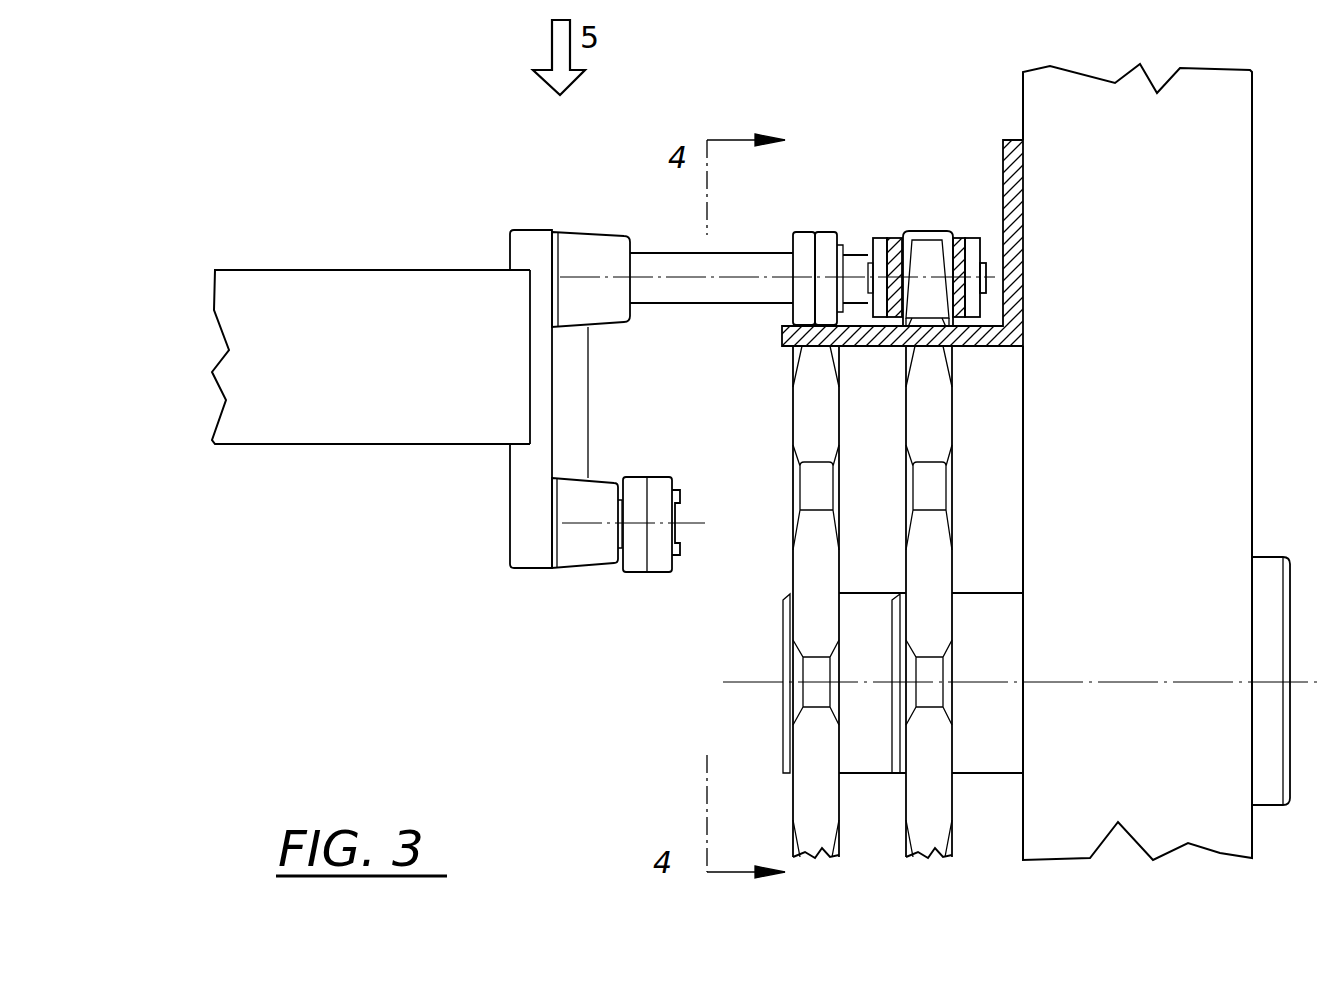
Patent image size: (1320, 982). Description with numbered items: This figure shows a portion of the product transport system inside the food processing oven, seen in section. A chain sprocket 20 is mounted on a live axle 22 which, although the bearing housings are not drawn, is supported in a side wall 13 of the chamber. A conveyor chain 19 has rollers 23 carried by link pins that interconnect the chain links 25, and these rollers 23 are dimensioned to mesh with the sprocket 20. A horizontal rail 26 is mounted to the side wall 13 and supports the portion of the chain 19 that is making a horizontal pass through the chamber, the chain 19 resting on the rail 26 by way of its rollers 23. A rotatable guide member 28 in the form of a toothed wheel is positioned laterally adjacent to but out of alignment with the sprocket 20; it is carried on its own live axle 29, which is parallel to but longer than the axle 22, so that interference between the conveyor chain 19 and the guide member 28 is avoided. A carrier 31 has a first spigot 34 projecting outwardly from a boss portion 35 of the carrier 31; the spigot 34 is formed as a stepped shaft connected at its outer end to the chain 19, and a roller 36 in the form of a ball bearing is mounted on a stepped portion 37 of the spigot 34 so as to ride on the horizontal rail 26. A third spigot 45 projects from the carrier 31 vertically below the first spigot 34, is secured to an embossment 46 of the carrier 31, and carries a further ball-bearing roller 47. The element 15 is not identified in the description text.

The side wall 13 is at (1218, 195).
The beam 15 is at (368, 428).
The conveyor chain 19 is at (910, 208).
The chain sprocket 20 is at (938, 573).
The live axle 22 is at (988, 605).
The roller 23 is at (928, 231).
The chain link 25 is at (990, 273).
The horizontal rail 26 is at (980, 352).
The rotatable guide member 28 is at (807, 765).
The live axle 29 is at (866, 745).
The carrier 31 is at (485, 520).
The first spigot 34 is at (737, 290).
The boss portion 35 is at (593, 256).
The roller 36 is at (817, 225).
The stepped portion 37 is at (853, 243).
The third spigot 45 is at (685, 512).
The embossment 46 is at (575, 553).
The roller 47 is at (648, 578).